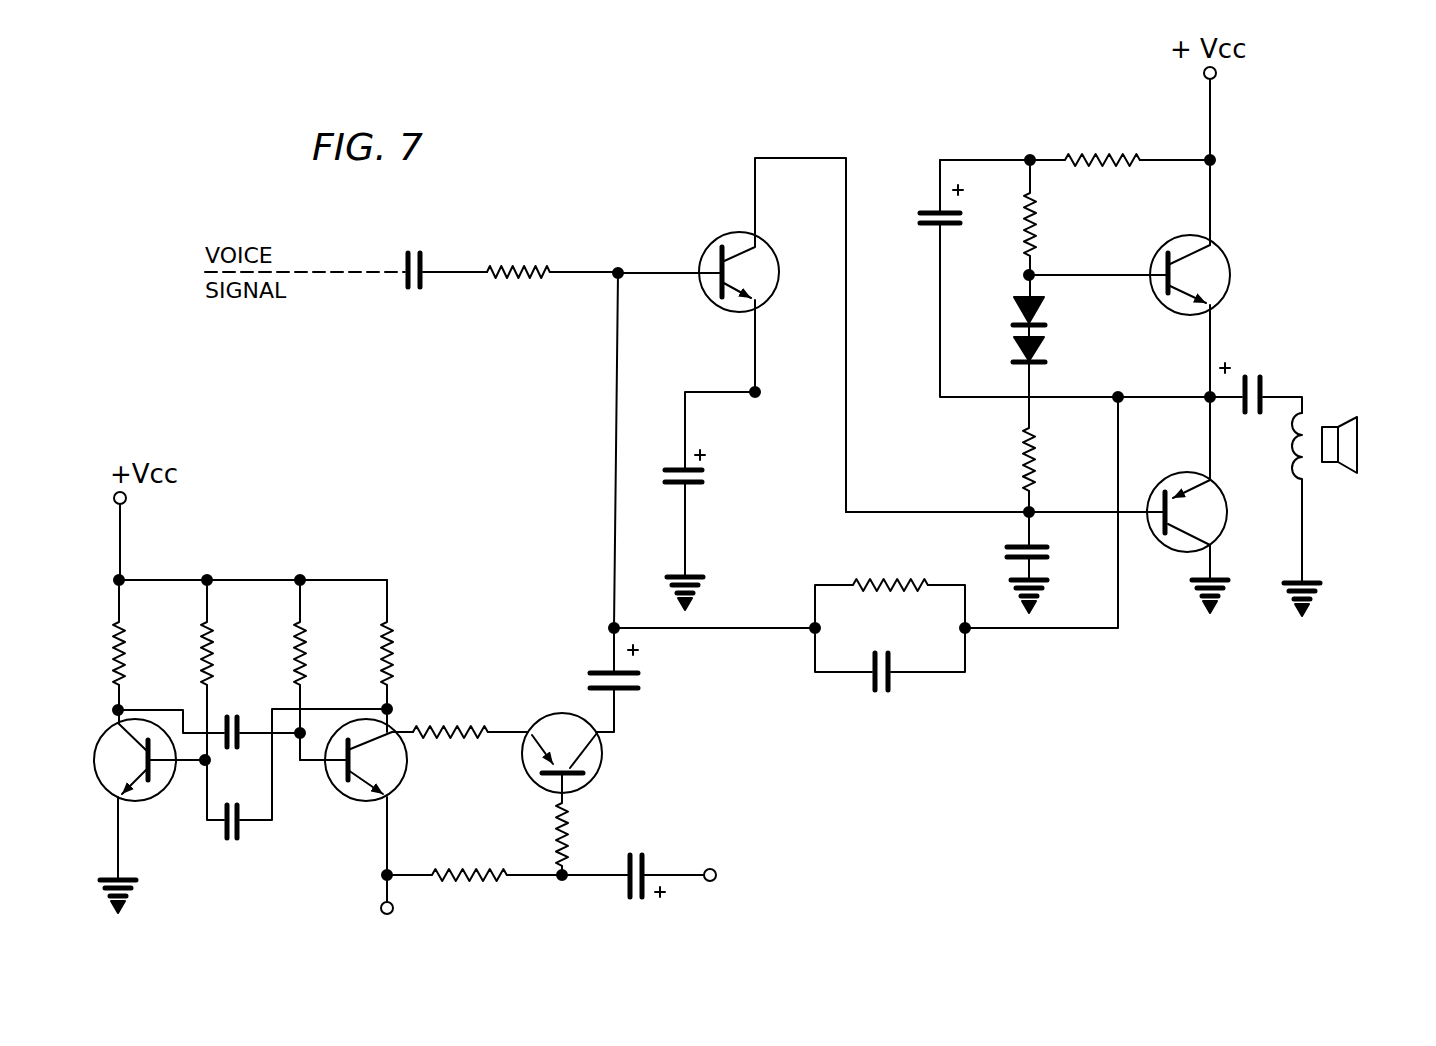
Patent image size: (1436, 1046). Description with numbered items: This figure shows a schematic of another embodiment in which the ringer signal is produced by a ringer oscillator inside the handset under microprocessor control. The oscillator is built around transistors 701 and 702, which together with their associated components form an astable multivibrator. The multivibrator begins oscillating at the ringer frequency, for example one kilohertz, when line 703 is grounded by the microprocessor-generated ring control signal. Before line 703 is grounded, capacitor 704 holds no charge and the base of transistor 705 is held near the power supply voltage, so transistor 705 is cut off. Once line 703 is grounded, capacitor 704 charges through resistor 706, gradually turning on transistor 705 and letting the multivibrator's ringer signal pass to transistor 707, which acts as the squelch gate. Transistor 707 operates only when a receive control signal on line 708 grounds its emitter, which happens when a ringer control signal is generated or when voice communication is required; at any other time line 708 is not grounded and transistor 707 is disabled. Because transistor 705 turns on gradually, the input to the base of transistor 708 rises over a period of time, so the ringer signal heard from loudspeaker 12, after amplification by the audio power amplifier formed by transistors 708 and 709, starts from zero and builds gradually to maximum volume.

The transistor 701 is at (148, 797).
The transistor 702 is at (353, 800).
The line 703 is at (383, 897).
The capacitor 704 is at (643, 860).
The transistor 705 is at (605, 757).
The resistor 706 is at (457, 867).
The squelch gate transistor 707 is at (715, 240).
The receive control line / transistor 708 is at (1232, 262).
The transistor 709 is at (1227, 518).
The loudspeaker 12 is at (1358, 443).